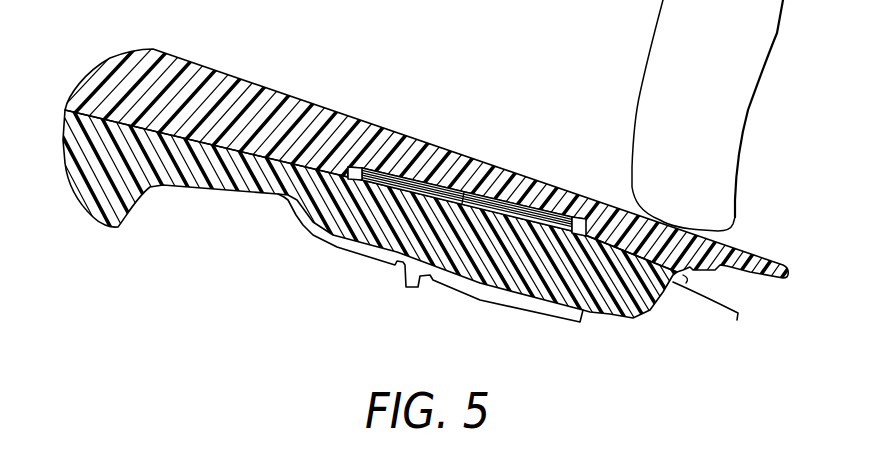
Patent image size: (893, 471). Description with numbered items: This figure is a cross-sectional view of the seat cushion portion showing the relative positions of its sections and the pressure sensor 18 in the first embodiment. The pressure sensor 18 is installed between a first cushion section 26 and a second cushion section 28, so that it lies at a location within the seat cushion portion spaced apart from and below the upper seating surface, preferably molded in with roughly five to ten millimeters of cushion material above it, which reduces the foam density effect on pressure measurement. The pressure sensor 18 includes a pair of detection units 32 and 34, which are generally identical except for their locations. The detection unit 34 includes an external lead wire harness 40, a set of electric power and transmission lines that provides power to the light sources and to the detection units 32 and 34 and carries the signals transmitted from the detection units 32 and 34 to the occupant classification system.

The pressure sensor 18 is at (428, 188).
The first cushion section 26 is at (223, 83).
The second cushion section 28 is at (177, 180).
The detection unit 32 is at (358, 170).
The detection unit 34 is at (577, 223).
The lead wire harness 40 is at (708, 300).